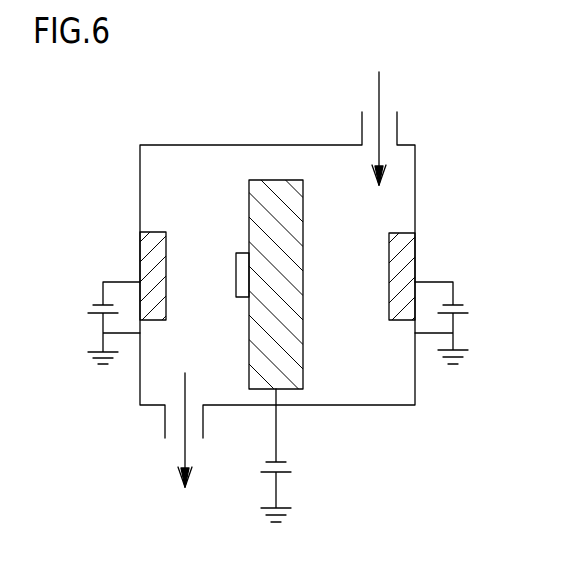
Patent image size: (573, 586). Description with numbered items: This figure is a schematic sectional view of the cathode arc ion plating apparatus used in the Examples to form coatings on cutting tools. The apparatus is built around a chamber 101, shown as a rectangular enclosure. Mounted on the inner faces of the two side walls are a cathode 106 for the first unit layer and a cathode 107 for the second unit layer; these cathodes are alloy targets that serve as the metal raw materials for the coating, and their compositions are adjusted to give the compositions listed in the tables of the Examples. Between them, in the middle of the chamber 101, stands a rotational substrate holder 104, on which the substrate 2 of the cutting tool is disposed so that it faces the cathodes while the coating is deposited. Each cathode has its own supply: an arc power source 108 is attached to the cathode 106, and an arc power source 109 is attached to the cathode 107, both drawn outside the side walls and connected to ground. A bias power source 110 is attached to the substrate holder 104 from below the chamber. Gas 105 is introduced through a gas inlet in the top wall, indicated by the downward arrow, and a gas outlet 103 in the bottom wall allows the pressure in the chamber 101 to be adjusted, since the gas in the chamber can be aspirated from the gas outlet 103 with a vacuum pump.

The chamber 101 is at (196, 144).
The rotational substrate holder 104 is at (274, 179).
The substrate 2 is at (234, 258).
The gas 105 is at (381, 116).
The gas outlet 103 is at (205, 430).
The cathode for first unit layer 106 is at (150, 232).
The cathode for second unit layer 107 is at (404, 233).
The arc power source 108 is at (120, 281).
The arc power source 109 is at (435, 281).
The bias power source 110 is at (278, 433).